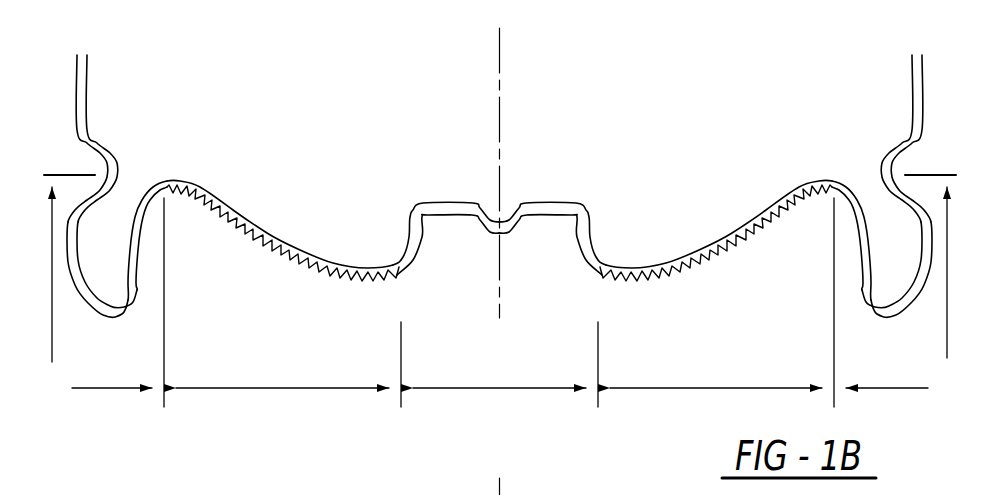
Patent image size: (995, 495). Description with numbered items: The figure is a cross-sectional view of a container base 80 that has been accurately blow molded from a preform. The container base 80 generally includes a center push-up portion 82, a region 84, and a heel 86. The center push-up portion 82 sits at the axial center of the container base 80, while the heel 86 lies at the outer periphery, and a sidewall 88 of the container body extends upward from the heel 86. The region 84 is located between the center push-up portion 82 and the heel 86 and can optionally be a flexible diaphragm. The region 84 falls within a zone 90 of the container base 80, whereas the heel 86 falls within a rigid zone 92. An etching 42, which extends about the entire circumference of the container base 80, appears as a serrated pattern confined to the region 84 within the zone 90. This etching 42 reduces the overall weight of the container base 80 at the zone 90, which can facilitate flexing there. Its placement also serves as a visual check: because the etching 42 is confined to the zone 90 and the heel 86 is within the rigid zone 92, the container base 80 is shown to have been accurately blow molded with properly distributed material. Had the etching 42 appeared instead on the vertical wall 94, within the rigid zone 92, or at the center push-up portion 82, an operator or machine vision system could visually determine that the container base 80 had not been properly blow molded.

The container base 80 is at (92, 412).
The center push-up portion 82 is at (523, 390).
The region 84 is at (247, 217).
The heel 86 is at (125, 323).
The sidewall 88 is at (76, 90).
The zone 90 is at (300, 390).
The rigid zone 92 is at (502, 291).
The vertical wall 94 is at (137, 268).
The etching 42 is at (226, 213).